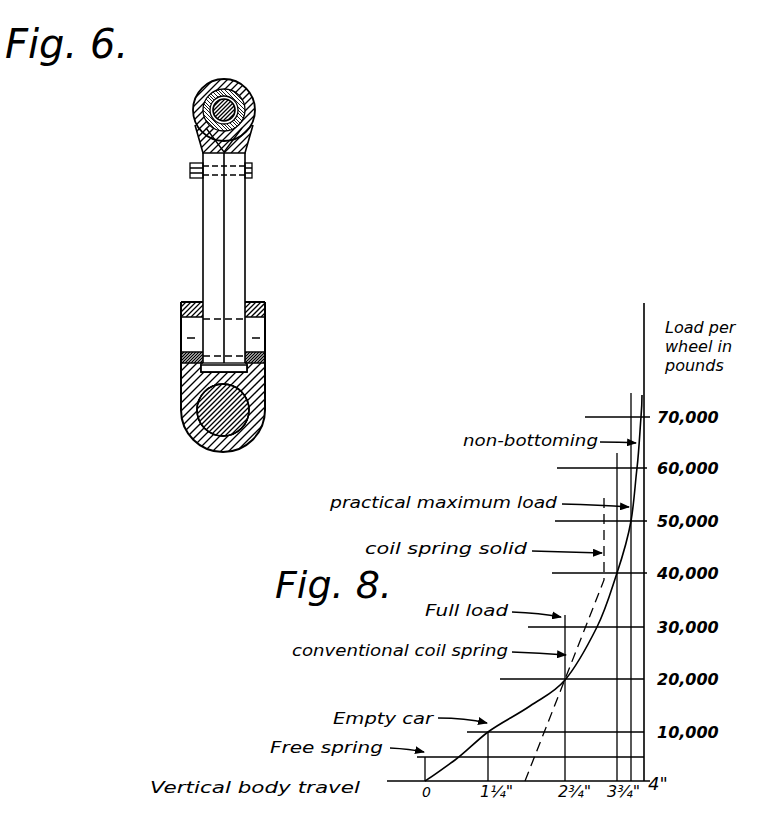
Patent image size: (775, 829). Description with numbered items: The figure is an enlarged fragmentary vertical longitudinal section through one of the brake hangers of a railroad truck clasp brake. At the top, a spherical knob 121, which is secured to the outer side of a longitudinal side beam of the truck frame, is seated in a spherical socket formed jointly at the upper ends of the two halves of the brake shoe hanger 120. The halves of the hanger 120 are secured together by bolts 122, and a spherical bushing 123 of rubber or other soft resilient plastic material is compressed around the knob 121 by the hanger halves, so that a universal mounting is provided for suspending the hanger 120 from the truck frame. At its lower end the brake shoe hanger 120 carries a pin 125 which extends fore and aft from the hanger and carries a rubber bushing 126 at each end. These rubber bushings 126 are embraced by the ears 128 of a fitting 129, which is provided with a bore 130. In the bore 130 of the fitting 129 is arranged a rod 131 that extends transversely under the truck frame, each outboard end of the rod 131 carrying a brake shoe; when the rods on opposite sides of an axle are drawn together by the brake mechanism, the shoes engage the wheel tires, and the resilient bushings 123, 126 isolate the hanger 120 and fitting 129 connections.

The brake shoe hanger 120 is at (237, 230).
The spherical knob 121 is at (253, 117).
The bolt 122 is at (252, 172).
The spherical bushing 123 is at (197, 117).
The pin 125 is at (188, 329).
The rubber bushing 126 is at (265, 307).
The ear 128 is at (197, 300).
The fitting 129 is at (265, 383).
The bore 130 is at (238, 407).
The rod 131 is at (212, 413).